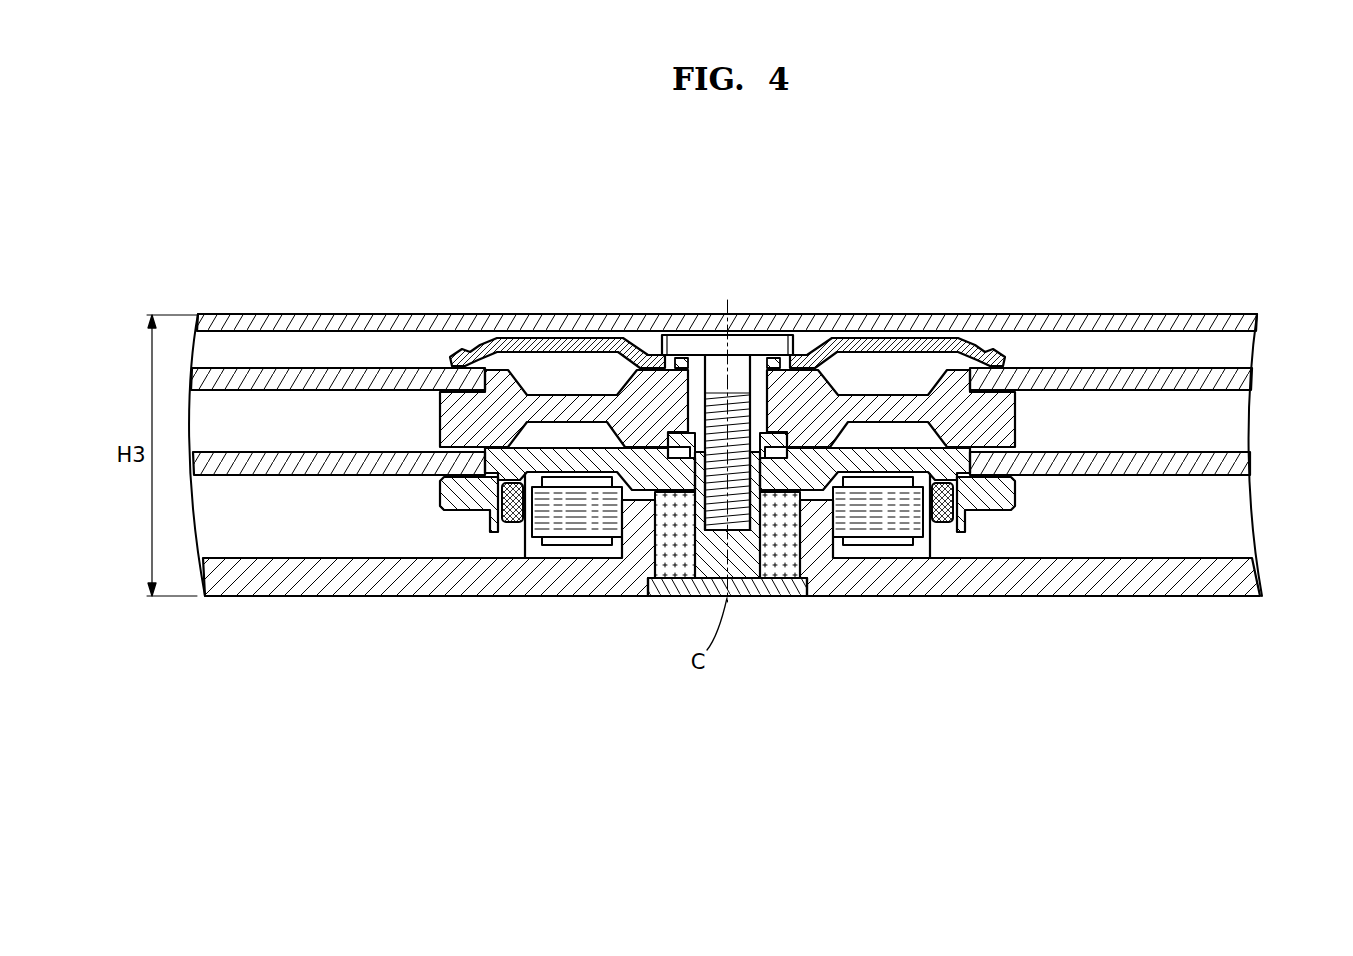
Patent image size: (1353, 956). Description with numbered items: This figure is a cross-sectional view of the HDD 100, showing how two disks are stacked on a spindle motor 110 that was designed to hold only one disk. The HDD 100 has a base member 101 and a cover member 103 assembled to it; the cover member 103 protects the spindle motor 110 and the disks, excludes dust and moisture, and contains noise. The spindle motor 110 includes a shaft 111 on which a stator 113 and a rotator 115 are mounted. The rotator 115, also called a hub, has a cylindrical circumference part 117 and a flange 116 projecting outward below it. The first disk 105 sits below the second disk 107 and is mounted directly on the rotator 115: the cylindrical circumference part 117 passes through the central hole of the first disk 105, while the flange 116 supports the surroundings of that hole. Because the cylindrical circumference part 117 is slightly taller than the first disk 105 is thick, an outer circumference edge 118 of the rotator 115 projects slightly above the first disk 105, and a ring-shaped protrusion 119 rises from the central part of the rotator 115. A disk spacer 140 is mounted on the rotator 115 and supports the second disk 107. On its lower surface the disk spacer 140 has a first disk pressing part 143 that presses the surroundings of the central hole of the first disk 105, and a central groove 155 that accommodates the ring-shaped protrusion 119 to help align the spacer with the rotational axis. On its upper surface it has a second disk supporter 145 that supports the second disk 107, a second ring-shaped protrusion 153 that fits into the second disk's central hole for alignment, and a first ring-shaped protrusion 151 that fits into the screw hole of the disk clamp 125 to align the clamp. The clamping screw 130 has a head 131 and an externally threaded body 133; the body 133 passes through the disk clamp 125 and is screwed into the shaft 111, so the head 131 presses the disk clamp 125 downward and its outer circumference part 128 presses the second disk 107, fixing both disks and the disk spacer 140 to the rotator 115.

The HDD 100 is at (362, 230).
The base member 101 is at (1183, 583).
The cover member 103 is at (1213, 325).
The first disk 105 is at (1250, 463).
The second disk 107 is at (1252, 380).
The spindle motor 110 is at (715, 583).
The shaft 111 is at (715, 612).
The stator 113 is at (580, 525).
The rotator 115 is at (512, 500).
The flange 116 is at (445, 507).
The cylindrical circumference part 117 is at (466, 470).
The outer circumference edge 118 is at (478, 412).
The ring-shaped protrusion 119 is at (760, 470).
The disk clamp 125 is at (866, 350).
The outer circumference part 128 is at (466, 355).
The clamping screw 130 is at (731, 407).
The head 131 is at (733, 347).
The body 133 is at (766, 352).
The disk spacer 140 is at (410, 417).
The first disk pressing part 143 is at (1033, 455).
The second disk supporter 145 is at (466, 382).
The first ring-shaped protrusion 151 is at (668, 358).
The second ring-shaped protrusion 153 is at (495, 378).
The central groove 155 is at (770, 520).